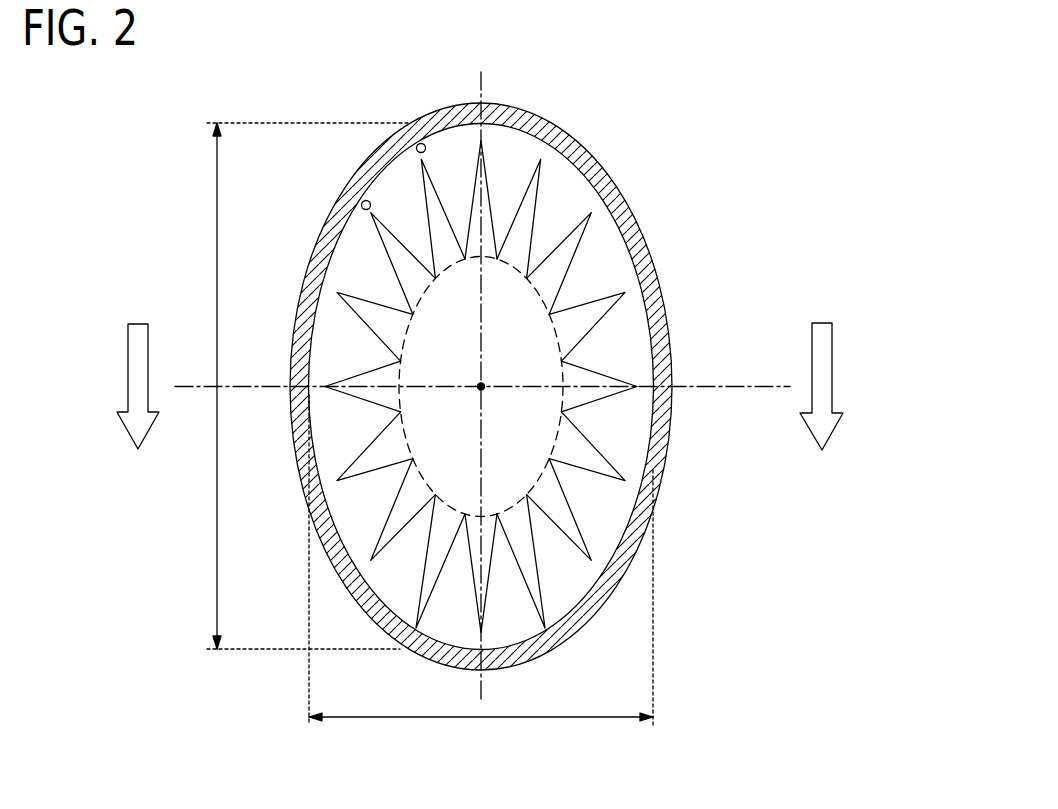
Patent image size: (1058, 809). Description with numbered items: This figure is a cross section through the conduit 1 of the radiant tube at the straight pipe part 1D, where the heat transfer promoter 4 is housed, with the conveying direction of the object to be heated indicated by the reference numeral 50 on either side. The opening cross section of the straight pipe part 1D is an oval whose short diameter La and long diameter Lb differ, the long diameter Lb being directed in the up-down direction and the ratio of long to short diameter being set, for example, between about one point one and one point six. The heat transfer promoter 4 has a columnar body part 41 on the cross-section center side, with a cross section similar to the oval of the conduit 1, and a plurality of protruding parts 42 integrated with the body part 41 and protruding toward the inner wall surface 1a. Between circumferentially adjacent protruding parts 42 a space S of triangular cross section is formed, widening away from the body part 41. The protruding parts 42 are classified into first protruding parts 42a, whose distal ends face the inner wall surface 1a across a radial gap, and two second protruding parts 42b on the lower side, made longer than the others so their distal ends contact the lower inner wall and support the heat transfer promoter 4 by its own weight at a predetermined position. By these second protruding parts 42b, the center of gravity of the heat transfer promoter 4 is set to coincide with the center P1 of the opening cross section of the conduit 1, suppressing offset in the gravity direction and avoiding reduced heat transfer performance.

The conduit 1 is at (524, 358).
The straight pipe part 1D is at (646, 511).
The inner wall surface 1a is at (527, 147).
The heat transfer promoter 4 is at (357, 330).
The body part 41 is at (537, 430).
The protruding parts 42 is at (467, 422).
The first protruding part 42a is at (567, 245).
The second protruding part 42b is at (530, 577).
The conveying direction of the object to be heated 50 is at (128, 368).
The center of the opening cross section of the conduit P1 is at (481, 386).
The space S is at (353, 265).
The short diameter La is at (481, 574).
The long diameter Lb is at (298, 386).